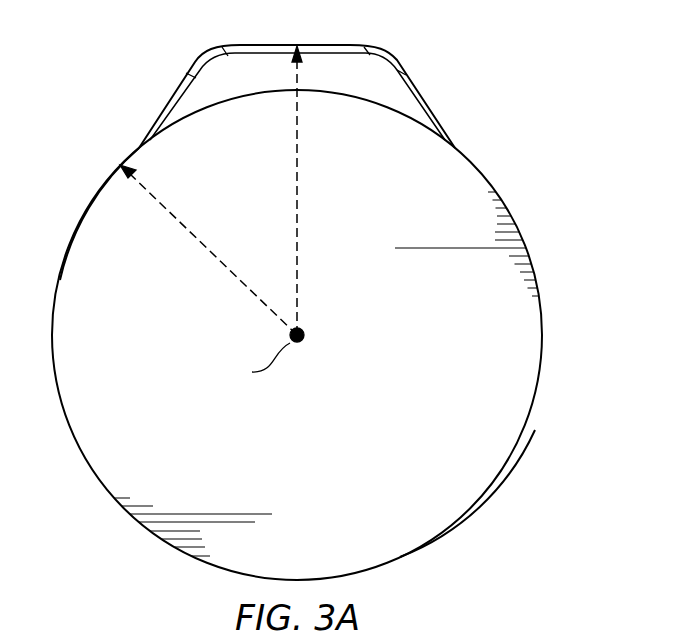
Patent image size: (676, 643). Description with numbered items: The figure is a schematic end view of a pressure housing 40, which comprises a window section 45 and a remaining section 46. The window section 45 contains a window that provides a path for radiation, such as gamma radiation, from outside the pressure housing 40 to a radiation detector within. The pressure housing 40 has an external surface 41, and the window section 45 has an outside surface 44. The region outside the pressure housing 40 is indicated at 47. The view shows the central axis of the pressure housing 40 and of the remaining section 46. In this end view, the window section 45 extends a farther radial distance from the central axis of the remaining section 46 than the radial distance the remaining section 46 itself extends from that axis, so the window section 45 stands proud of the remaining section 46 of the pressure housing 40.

The pressure housing 40 is at (329, 296).
The external surface 41 is at (88, 467).
The outside surface 44 is at (260, 45).
The window section 45 is at (190, 78).
The remaining section 46 is at (480, 458).
The outside of pressure housing 47 is at (81, 147).